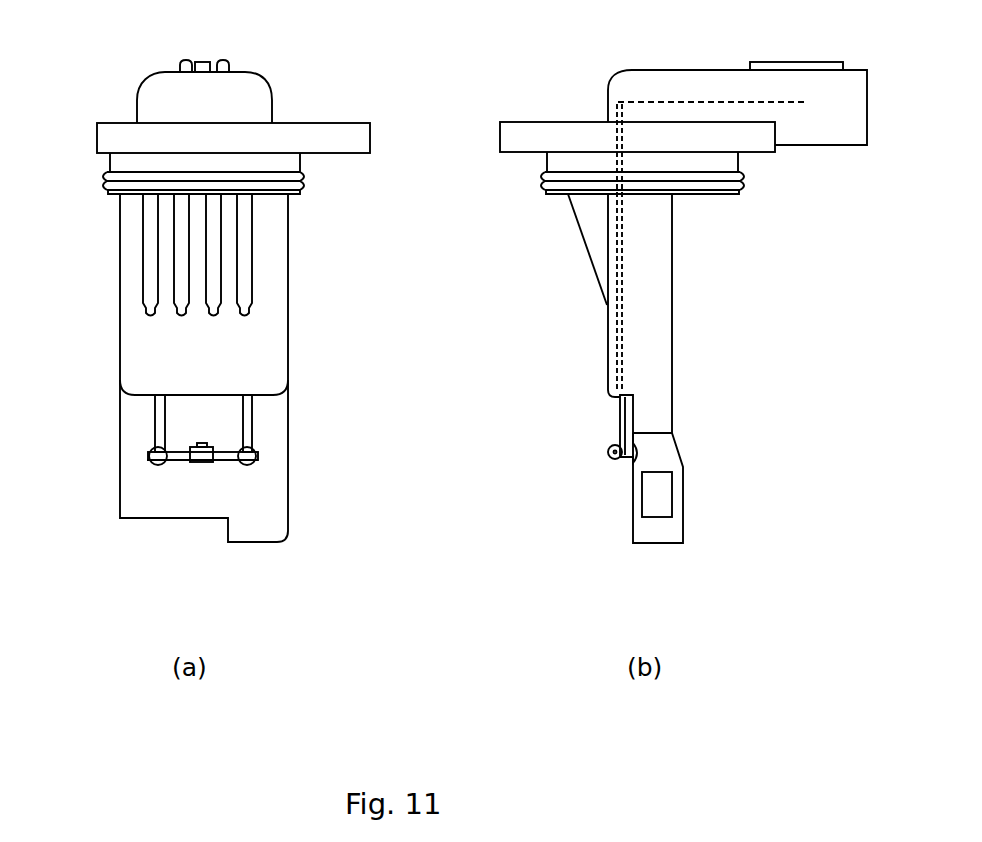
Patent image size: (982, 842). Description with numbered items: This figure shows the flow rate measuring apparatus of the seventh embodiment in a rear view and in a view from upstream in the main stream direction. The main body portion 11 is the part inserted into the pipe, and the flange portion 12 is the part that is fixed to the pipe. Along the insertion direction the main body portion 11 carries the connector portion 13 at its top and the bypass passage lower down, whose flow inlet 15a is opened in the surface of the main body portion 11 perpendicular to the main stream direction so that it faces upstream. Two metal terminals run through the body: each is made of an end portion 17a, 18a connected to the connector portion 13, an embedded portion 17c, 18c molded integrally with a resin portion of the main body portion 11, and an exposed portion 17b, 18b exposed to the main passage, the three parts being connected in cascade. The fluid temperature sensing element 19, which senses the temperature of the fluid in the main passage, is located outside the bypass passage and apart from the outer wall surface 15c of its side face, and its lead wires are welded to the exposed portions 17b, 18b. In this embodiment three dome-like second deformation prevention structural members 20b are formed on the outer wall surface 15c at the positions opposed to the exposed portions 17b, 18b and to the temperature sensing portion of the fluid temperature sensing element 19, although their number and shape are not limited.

The main body portion 11 is at (290, 335).
The flange portion 12 is at (335, 122).
The connector portion 13 is at (145, 101).
The flow inlet 15a is at (662, 505).
The outer wall surface 15c is at (150, 455).
The end portion 17a is at (711, 61).
The exposed portion 17b is at (158, 438).
The embedded portion 17c is at (527, 247).
The end portion 18a is at (733, 100).
The exposed portion 18b is at (247, 438).
The embedded portion 18c is at (613, 343).
The fluid temperature sensing element 19 is at (608, 455).
The second deformation prevention structural member 20b is at (153, 462).